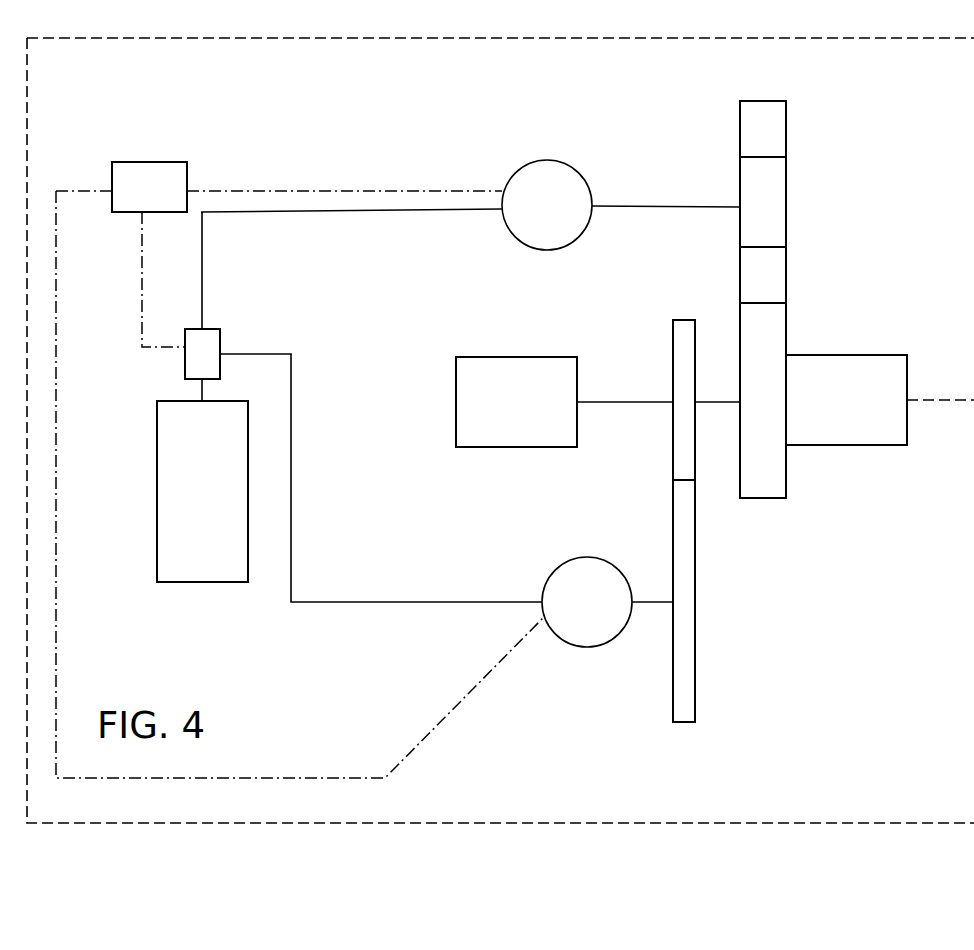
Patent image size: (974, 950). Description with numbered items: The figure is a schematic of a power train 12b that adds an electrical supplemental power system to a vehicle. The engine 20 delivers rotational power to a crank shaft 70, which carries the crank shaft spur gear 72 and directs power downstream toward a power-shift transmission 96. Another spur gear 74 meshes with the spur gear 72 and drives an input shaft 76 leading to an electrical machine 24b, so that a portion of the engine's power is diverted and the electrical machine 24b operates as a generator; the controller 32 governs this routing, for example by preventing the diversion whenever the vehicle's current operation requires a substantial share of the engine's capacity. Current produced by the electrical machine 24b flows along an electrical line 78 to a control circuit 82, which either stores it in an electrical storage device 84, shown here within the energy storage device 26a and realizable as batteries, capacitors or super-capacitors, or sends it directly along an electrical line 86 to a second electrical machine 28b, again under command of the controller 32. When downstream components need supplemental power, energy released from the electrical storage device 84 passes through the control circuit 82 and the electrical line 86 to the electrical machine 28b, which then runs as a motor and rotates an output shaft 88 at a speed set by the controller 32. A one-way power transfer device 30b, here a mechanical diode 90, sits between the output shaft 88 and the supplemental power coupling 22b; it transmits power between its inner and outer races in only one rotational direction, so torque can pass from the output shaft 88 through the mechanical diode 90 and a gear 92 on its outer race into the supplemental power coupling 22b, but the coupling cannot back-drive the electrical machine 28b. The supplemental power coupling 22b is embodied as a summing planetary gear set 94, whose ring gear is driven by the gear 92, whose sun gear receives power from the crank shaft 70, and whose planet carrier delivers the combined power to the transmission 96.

The power train 12b is at (957, 774).
The engine 20 is at (520, 447).
The supplemental power coupling 22b is at (812, 511).
The electrical machine 24b is at (587, 647).
The energy storage subsystem 26a is at (134, 423).
The electrical machine 28b is at (548, 161).
The one-way power transfer device 30b is at (710, 155).
The controller 32 is at (187, 180).
The crank shaft 70 is at (651, 404).
The spur gear 72 is at (672, 374).
The spur gear 74 is at (695, 646).
The input shaft 76 is at (652, 604).
The electrical line 78 is at (447, 603).
The control circuit 82 is at (220, 342).
The electrical storage device 84 is at (157, 522).
The electrical line 86 is at (382, 210).
The output shaft 88 is at (683, 207).
The mechanical diode 90 is at (786, 227).
The gear 92 is at (786, 287).
The summing planetary gear set 94 is at (770, 498).
The power-shift transmission 96 is at (848, 445).